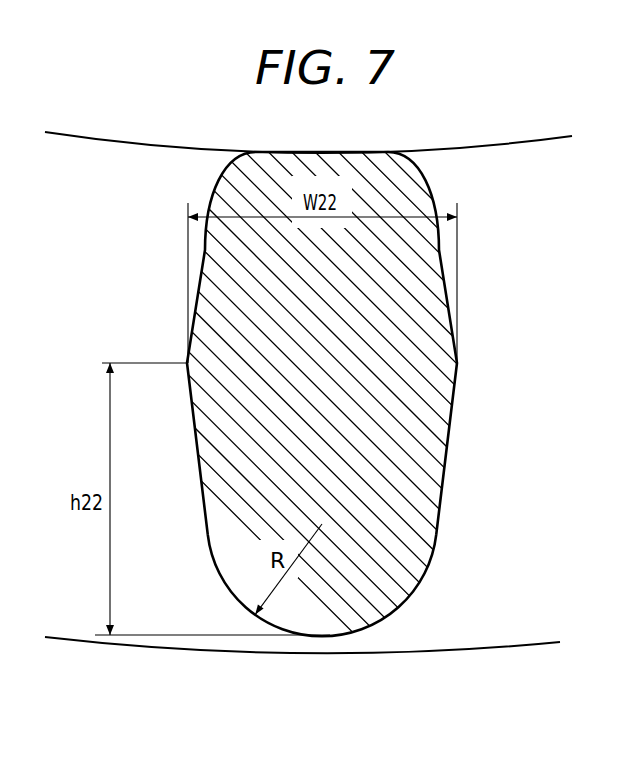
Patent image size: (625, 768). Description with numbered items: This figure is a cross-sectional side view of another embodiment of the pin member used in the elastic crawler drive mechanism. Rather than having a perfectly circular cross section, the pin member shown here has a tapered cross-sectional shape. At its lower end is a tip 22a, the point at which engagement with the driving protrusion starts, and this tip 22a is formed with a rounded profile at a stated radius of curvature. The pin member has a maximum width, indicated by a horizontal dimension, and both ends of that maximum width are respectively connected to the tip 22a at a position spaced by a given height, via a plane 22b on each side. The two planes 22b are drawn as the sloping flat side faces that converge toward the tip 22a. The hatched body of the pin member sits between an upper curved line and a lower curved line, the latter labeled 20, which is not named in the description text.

The substrate 20 is at (190, 650).
The tip 22a is at (373, 622).
The plane 22b is at (203, 468).